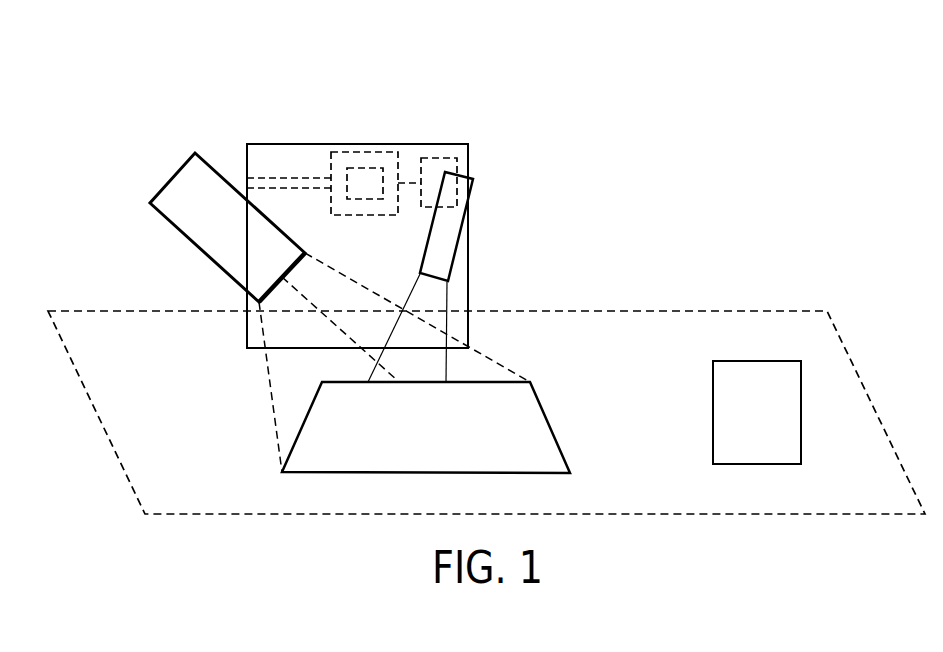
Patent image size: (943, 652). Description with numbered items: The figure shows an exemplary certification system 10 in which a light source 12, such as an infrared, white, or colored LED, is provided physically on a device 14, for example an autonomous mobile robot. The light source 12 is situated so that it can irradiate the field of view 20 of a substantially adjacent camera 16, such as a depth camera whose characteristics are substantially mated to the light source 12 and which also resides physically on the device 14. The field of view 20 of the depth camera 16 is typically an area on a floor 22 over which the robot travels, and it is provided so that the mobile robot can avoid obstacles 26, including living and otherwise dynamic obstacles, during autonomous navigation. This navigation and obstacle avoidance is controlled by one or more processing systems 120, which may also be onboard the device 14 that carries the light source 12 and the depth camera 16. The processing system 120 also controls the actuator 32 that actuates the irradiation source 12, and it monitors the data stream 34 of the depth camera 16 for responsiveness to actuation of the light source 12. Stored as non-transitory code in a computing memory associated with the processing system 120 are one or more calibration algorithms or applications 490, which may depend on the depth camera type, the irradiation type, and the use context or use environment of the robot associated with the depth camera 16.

The system 10 is at (741, 107).
The light source 12 is at (455, 249).
The device 14 is at (417, 144).
The camera 16 is at (173, 176).
The field of view 20 is at (553, 427).
The floor 22 is at (695, 311).
The obstacles 26 is at (771, 426).
The actuator 32 is at (447, 158).
The data stream 34 is at (295, 178).
The processing system 120 is at (354, 152).
The calibration algorithms/applications 490 is at (364, 185).